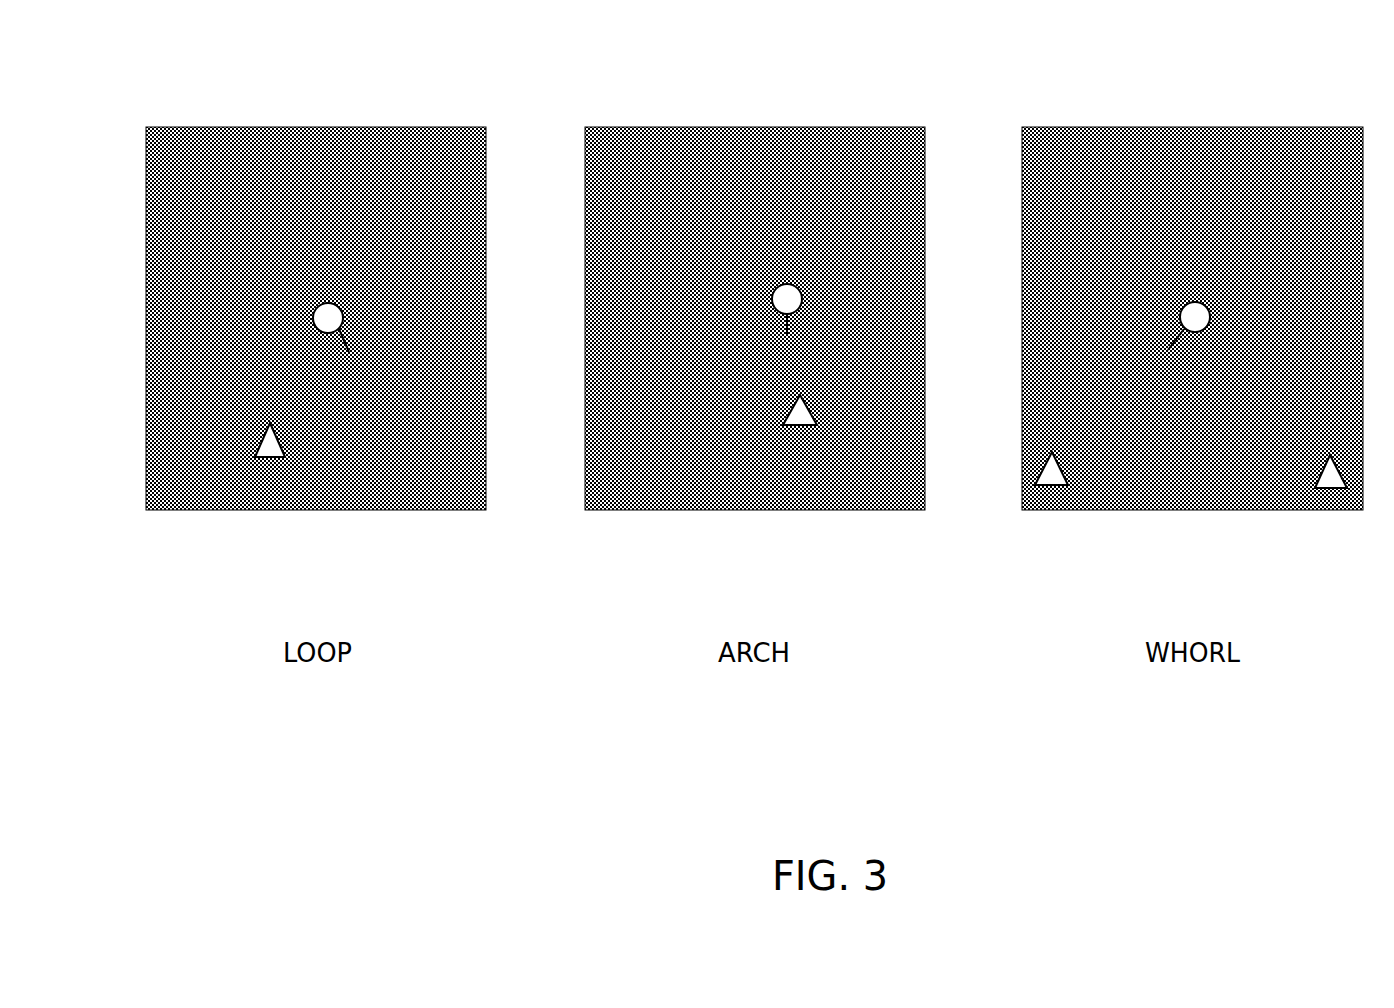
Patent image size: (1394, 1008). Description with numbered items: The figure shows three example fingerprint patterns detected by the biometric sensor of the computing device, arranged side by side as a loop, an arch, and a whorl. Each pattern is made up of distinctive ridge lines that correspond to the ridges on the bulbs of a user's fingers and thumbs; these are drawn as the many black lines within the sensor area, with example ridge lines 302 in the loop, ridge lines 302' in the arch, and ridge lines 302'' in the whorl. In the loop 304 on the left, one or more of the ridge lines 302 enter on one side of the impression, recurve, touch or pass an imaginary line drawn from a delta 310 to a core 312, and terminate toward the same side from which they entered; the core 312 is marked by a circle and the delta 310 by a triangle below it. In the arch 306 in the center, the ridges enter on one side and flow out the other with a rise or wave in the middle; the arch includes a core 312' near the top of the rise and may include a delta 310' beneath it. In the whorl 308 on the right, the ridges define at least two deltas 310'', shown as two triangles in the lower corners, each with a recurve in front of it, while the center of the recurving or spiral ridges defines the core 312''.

The ridge lines 302 is at (323, 273).
The core 312 is at (290, 194).
The delta 310 is at (234, 502).
The loop 304 is at (360, 537).
The ridge lines 302' is at (777, 271).
The core 312' is at (743, 184).
The delta 310' is at (746, 489).
The arch 306 is at (838, 534).
The ridge lines 302'' is at (1203, 275).
The core 312'' is at (1155, 195).
The deltas 310'' is at (1182, 526).
The whorl 308 is at (1172, 522).